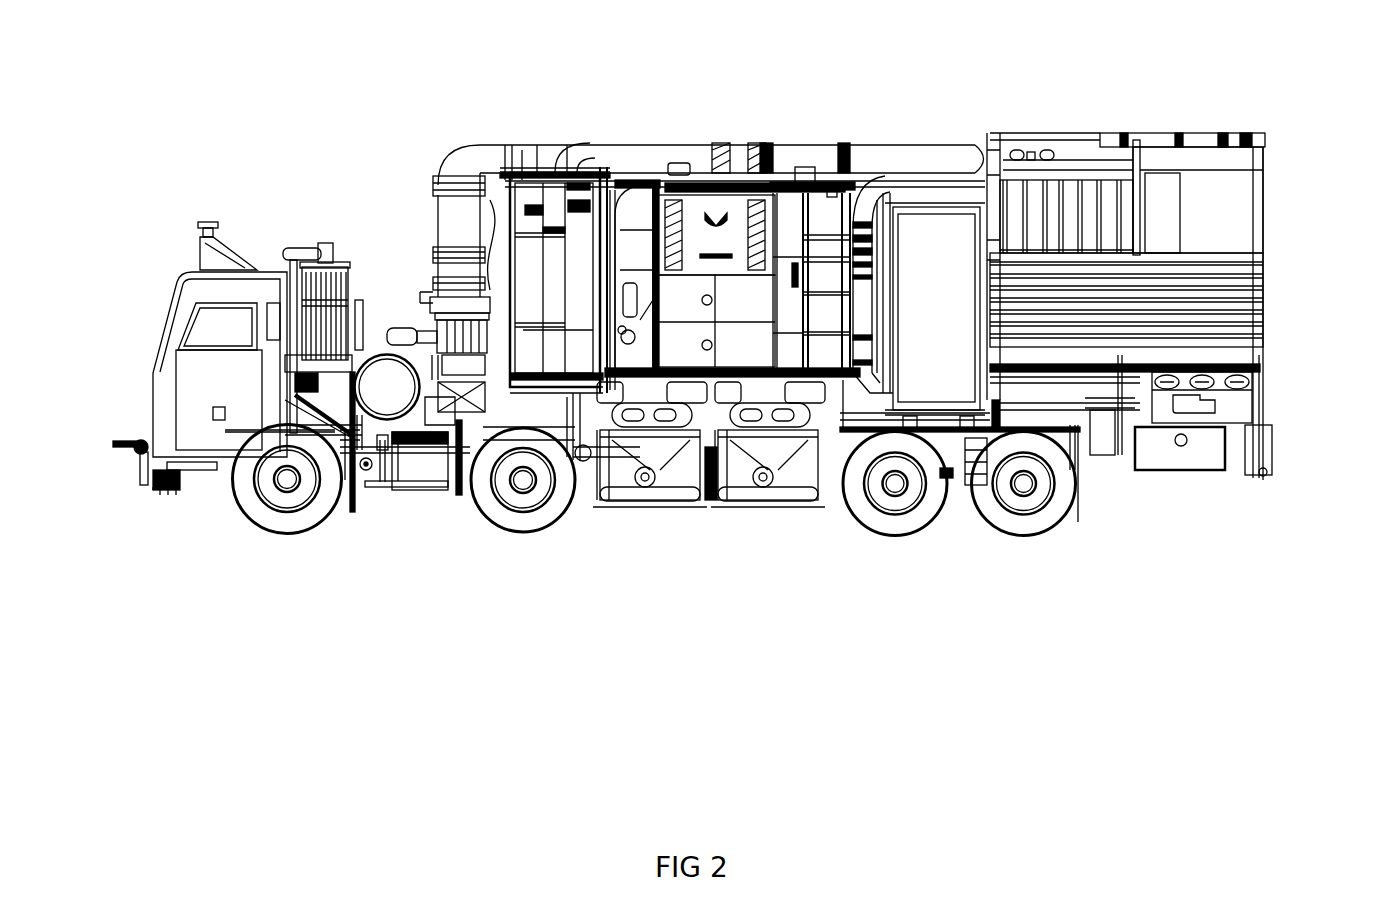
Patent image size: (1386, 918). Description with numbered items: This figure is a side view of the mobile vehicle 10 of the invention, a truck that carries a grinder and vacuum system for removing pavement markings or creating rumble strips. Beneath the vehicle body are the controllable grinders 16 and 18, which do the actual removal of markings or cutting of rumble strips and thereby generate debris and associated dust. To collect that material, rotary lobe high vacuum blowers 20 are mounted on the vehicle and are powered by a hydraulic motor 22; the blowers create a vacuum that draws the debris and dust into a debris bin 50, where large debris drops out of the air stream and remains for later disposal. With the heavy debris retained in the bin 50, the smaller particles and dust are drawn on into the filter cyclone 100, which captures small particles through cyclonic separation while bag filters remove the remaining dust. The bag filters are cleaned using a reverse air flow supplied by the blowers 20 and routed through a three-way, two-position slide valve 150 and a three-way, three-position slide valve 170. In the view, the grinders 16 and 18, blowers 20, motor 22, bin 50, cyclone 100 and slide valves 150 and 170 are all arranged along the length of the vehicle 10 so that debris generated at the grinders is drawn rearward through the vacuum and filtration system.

The mobile vehicle 10 is at (636, 92).
The controllable grinder 16 is at (640, 498).
The controllable grinder 18 is at (755, 500).
The rotary lobe high vacuum blower 20 is at (415, 490).
The hydraulic motor 22 is at (757, 347).
The debris bin 50 is at (1042, 205).
The filter cyclone 100 is at (1220, 222).
The 3-way, 2-position slide valve 150 is at (423, 300).
The 3-way, 3-position slide valve 170 is at (935, 397).